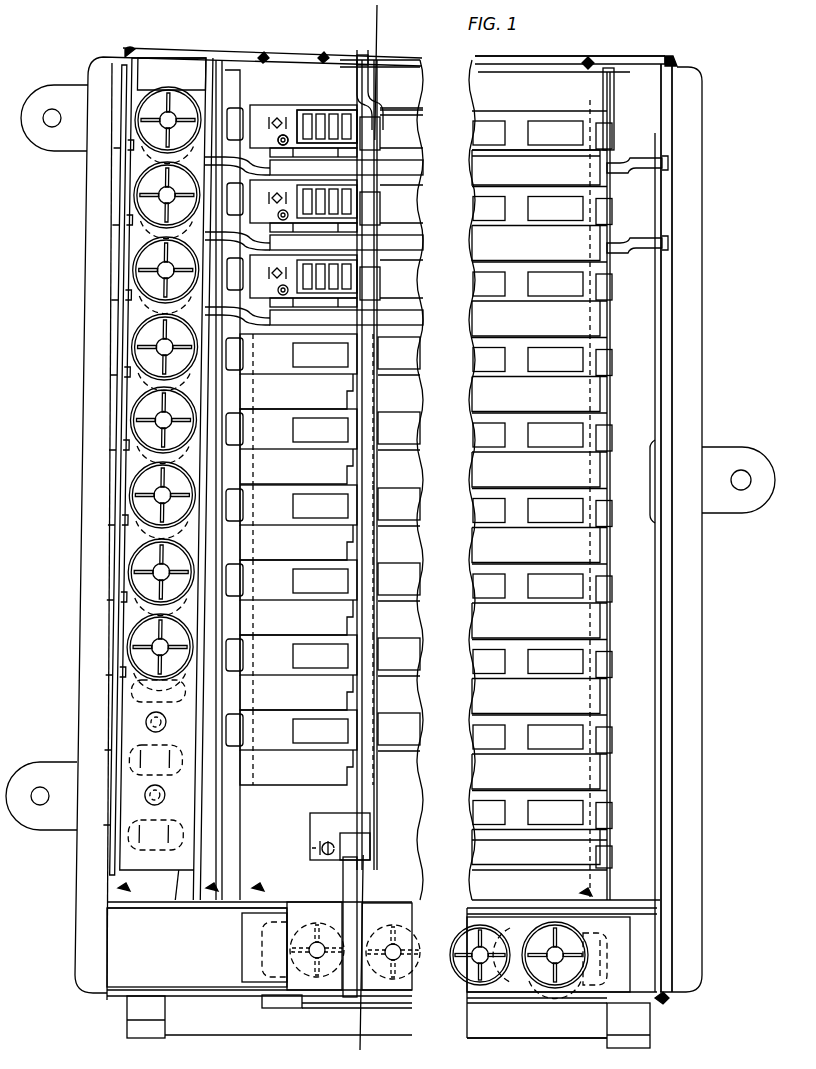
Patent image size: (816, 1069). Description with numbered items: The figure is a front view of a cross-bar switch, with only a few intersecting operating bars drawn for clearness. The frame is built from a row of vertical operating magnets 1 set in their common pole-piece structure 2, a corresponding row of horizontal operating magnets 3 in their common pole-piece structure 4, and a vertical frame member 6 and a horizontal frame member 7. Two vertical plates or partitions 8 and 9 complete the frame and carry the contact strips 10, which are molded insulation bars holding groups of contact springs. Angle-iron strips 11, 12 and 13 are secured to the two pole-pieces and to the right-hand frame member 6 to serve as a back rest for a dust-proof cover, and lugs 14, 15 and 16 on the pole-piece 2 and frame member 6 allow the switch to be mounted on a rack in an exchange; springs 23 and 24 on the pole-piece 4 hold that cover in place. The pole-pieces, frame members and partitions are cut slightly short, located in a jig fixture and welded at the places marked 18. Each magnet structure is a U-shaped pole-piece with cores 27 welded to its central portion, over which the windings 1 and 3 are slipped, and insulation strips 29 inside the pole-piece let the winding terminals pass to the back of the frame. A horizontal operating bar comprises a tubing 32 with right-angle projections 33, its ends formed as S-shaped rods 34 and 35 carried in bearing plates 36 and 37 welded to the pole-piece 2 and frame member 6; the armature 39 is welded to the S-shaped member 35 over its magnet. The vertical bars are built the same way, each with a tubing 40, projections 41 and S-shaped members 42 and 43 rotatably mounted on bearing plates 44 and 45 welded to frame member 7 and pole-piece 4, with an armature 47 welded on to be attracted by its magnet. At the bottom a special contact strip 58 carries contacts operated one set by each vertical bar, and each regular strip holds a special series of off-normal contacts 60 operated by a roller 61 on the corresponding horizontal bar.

The vertical operating magnets 1 is at (145, 410).
The common pole-piece structure 2 is at (408, 25).
The horizontal operating magnets 3 is at (540, 972).
The common pole-piece structure 4 is at (213, 980).
The vertical frame member 6 is at (664, 564).
The horizontal frame member 7 is at (614, 56).
The vertical plate or partition 8 is at (258, 59).
The vertical plate or partition 9 is at (614, 88).
The contact strips 10 is at (588, 800).
The angle-iron strip 11 is at (96, 437).
The angle-iron strip 12 is at (547, 1030).
The angle-iron strip 13 is at (683, 601).
The lug 14 is at (76, 136).
The lug 15 is at (51, 822).
The lug 16 is at (745, 500).
The welding places 18 is at (134, 50).
The spring 23 is at (153, 1022).
The spring 24 is at (640, 1044).
The cores 27 is at (154, 795).
The insulation strips 29 is at (188, 872).
The tubing 32 is at (602, 174).
The projections 33 is at (522, 153).
The S-shaped rod 34 is at (232, 150).
The S-shaped rod 35 is at (622, 172).
The bearing plate 36 is at (119, 262).
The bearing plate 37 is at (674, 273).
The armature 39 is at (140, 95).
The tubing 40 is at (360, 855).
The projections 41 is at (345, 748).
The S-shaped member 42 is at (343, 886).
The S-shaped member 43 is at (365, 90).
The bearing plate 44 is at (274, 1008).
The bearing plate 45 is at (408, 66).
The armature 47 is at (305, 993).
The special contact strip 58 is at (600, 853).
The special series of contacts 60 is at (282, 136).
The roller 61 is at (295, 116).